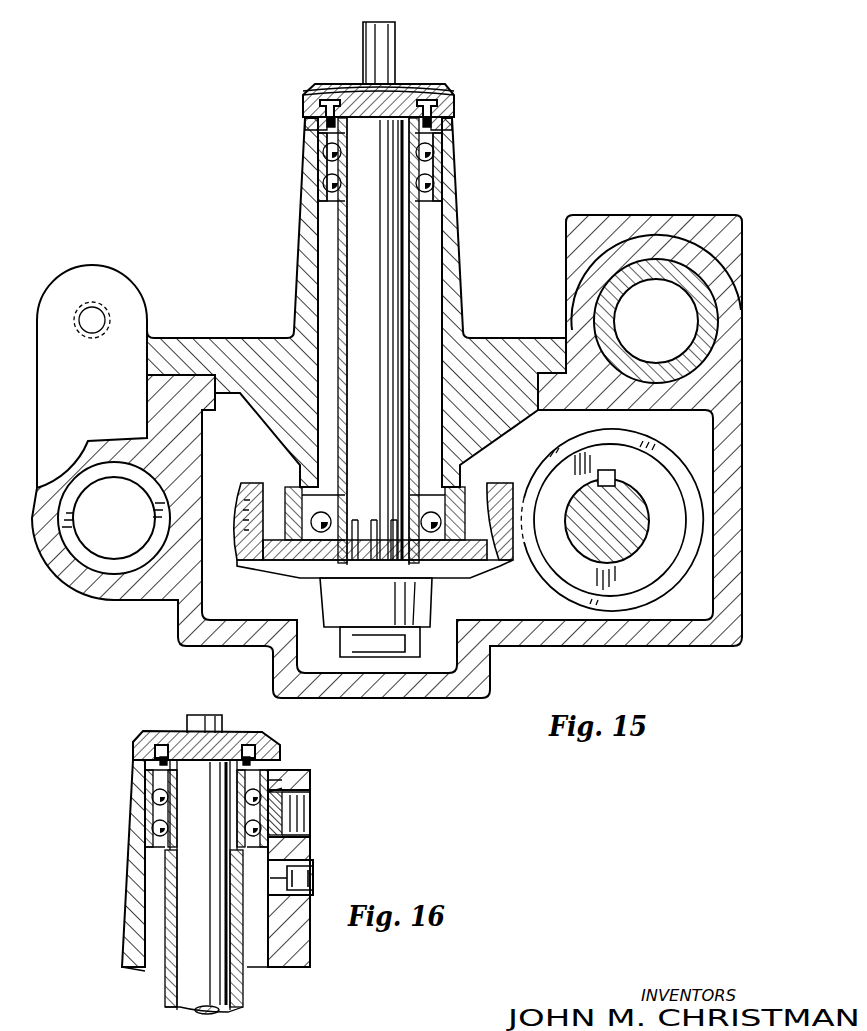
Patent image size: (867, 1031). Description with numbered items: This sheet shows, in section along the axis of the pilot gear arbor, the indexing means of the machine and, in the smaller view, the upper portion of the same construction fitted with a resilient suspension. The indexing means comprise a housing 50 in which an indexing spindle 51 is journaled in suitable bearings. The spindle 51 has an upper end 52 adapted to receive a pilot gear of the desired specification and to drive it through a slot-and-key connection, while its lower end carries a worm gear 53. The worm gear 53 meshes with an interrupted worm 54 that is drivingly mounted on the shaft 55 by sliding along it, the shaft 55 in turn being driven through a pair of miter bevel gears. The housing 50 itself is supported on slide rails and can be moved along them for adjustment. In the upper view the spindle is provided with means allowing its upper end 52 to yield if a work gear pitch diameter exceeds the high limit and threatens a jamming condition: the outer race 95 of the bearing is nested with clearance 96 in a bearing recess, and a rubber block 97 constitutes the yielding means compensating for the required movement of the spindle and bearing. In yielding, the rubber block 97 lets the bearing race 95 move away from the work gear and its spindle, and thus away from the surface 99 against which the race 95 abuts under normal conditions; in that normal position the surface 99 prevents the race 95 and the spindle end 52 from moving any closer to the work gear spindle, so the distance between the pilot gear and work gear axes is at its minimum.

In FIG. 15, the housing 50 is at (297, 243).
In FIG. 16, the housing 50 is at (136, 831).
In FIG. 15, the indexing spindle 51 is at (395, 250).
In FIG. 16, the indexing spindle 51 is at (190, 886).
In FIG. 15, the upper end of the spindle 52 is at (396, 52).
In FIG. 16, the upper end of the spindle 52 is at (190, 720).
In FIG. 15, the worm gear 53 is at (252, 548).
In FIG. 15, the interrupted worm 54 is at (548, 578).
In FIG. 15, the shaft 55 is at (628, 553).
In FIG. 16, the outer race of the bearing 95 is at (283, 786).
In FIG. 16, the clearance 96 is at (314, 843).
In FIG. 16, the rubber block 97 is at (311, 803).
In FIG. 16, the surface 99 is at (145, 801).